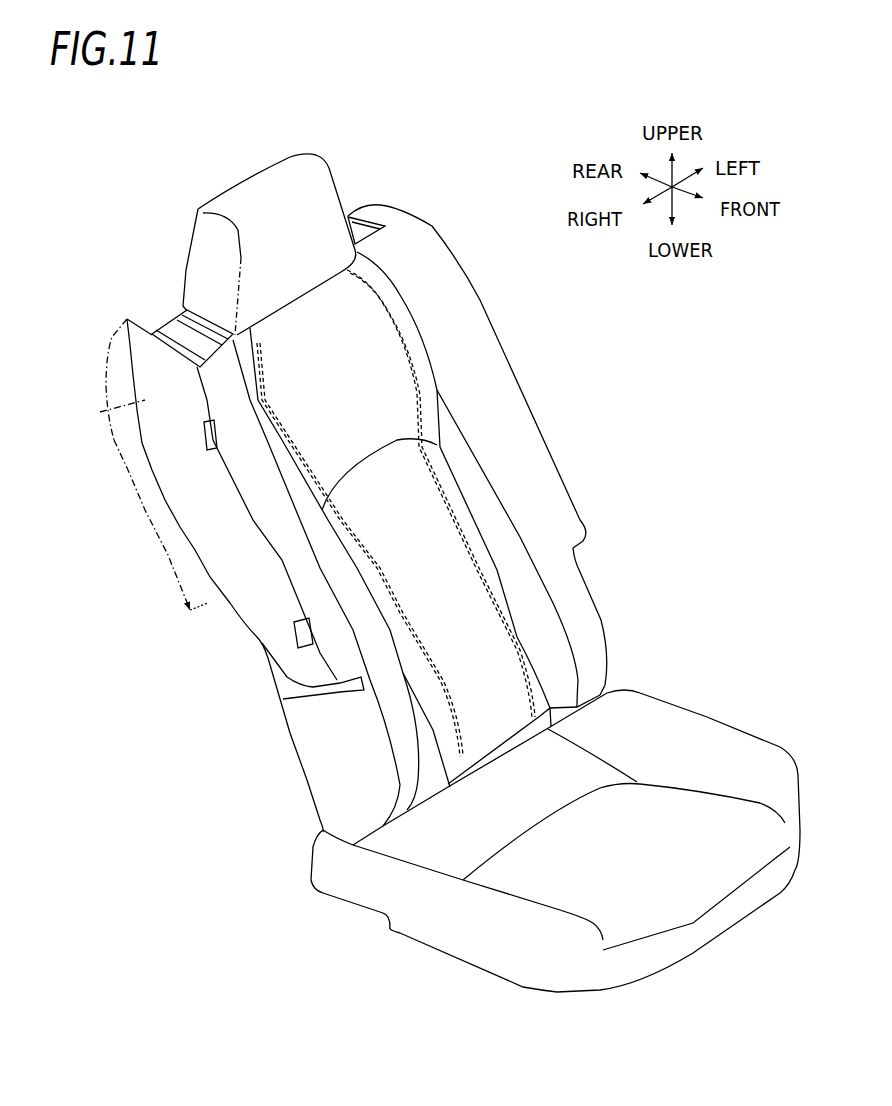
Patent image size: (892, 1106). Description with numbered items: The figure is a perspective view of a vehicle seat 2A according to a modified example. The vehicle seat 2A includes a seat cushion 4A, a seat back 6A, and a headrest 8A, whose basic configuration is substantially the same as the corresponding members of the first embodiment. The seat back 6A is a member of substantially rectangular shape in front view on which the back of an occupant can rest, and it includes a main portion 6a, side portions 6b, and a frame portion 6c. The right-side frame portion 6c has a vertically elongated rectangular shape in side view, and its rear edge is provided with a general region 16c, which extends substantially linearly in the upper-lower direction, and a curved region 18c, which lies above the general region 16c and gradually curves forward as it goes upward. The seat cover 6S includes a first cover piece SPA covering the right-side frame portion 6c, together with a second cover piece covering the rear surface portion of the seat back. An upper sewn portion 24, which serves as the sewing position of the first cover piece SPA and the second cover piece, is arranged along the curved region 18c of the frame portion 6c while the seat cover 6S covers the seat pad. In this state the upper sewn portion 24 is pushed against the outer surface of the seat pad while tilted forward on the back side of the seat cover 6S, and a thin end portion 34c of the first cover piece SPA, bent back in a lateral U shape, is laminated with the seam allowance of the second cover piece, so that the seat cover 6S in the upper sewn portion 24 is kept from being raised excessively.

The vehicle seat 2A is at (477, 167).
The headrest 8A is at (334, 164).
The seat back 6A is at (545, 431).
The seat cushion 4A is at (713, 716).
The main portion 6a is at (367, 421).
The side portions 6b is at (502, 421).
The frame portion 6c is at (213, 506).
The seat cover 6S is at (182, 533).
The first cover piece SPA is at (230, 555).
The general region 16c is at (161, 525).
The curved region 18c is at (114, 379).
The upper sewn portion 24 is at (139, 330).
The thin end portion 34c is at (192, 338).